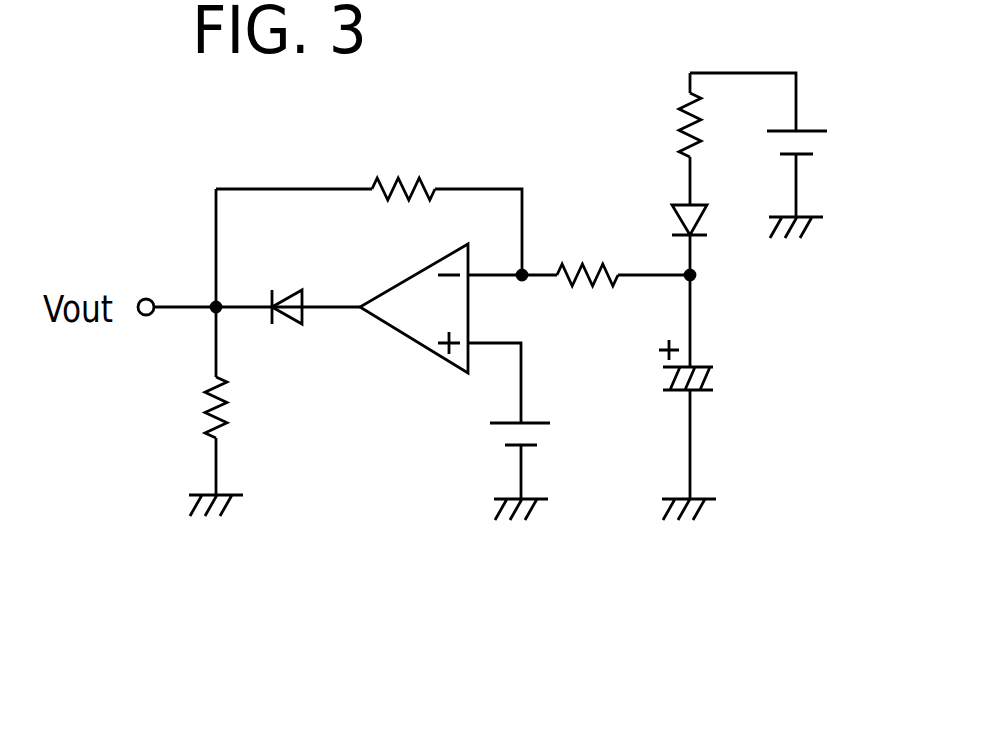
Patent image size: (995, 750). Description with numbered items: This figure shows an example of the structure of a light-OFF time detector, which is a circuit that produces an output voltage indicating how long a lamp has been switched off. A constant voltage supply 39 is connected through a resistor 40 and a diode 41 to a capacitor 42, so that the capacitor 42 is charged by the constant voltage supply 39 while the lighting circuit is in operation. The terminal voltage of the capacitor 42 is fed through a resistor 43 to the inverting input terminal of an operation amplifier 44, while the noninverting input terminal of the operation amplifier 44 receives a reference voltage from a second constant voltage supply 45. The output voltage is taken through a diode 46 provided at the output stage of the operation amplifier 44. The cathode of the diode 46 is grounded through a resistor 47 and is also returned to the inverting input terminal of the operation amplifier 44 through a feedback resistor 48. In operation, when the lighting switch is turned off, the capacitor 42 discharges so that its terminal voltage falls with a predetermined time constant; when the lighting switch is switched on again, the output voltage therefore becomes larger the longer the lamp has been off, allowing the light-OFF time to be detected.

The constant voltage supply 39 is at (812, 131).
The resistor 40 is at (685, 110).
The diode 41 is at (675, 214).
The capacitor 42 is at (700, 367).
The resistor 43 is at (588, 288).
The operation amplifier 44 is at (398, 336).
The constant voltage supply 45 is at (495, 423).
The diode 46 is at (283, 290).
The resistor 47 is at (205, 412).
The feedback resistor 48 is at (420, 180).